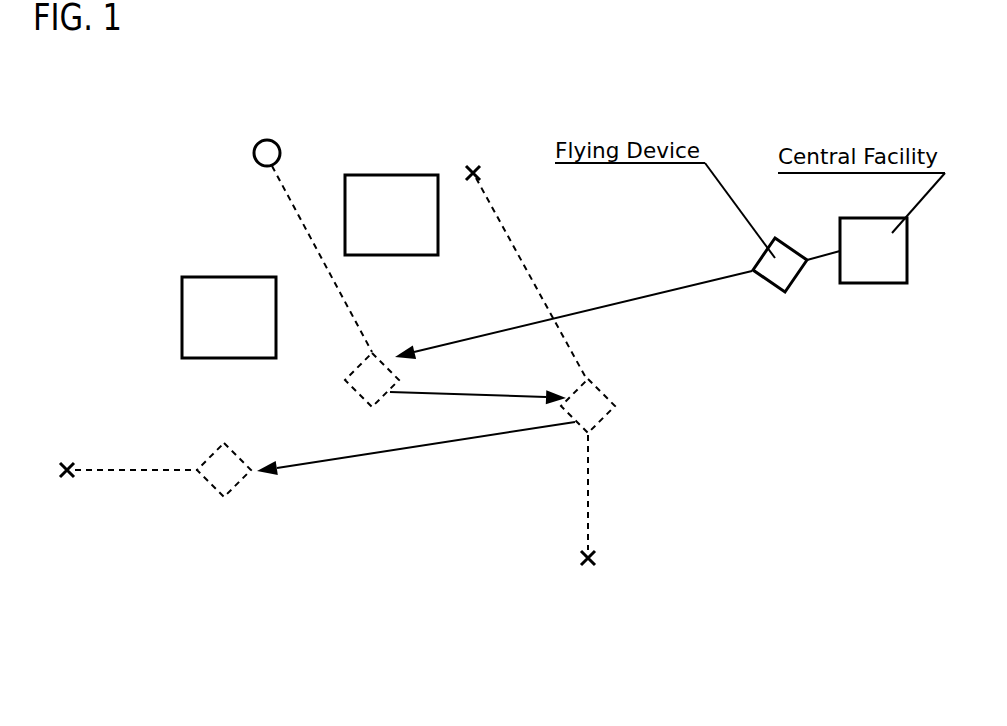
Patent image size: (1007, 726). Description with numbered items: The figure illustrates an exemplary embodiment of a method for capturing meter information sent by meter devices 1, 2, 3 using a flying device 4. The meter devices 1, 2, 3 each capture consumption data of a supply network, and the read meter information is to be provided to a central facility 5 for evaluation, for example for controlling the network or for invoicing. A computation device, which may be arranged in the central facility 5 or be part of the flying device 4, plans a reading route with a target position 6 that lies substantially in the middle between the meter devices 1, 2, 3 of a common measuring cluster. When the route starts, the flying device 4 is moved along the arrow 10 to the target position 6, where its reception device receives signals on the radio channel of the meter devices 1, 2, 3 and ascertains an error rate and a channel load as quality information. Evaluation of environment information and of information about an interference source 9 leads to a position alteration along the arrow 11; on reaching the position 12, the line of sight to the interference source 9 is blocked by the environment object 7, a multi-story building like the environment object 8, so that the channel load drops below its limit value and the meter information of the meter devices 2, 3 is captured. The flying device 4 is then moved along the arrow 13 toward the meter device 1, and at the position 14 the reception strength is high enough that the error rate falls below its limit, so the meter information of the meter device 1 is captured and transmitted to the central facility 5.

The meter device 1 is at (67, 478).
The meter device 2 is at (474, 172).
The meter device 3 is at (595, 560).
The flying device 4 is at (768, 285).
The central facility 5 is at (876, 283).
The target position 6 is at (363, 397).
The environment object 7 is at (380, 175).
The environment object 8 is at (182, 311).
The interference source 9 is at (253, 143).
The arrow 10 is at (643, 300).
The arrow 11 is at (483, 395).
The position 12 is at (603, 418).
The arrow 13 is at (422, 445).
The position 14 is at (212, 485).